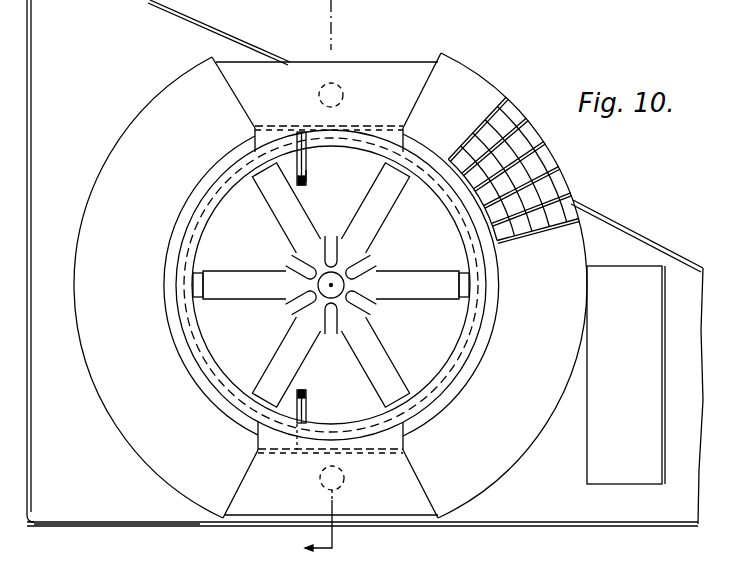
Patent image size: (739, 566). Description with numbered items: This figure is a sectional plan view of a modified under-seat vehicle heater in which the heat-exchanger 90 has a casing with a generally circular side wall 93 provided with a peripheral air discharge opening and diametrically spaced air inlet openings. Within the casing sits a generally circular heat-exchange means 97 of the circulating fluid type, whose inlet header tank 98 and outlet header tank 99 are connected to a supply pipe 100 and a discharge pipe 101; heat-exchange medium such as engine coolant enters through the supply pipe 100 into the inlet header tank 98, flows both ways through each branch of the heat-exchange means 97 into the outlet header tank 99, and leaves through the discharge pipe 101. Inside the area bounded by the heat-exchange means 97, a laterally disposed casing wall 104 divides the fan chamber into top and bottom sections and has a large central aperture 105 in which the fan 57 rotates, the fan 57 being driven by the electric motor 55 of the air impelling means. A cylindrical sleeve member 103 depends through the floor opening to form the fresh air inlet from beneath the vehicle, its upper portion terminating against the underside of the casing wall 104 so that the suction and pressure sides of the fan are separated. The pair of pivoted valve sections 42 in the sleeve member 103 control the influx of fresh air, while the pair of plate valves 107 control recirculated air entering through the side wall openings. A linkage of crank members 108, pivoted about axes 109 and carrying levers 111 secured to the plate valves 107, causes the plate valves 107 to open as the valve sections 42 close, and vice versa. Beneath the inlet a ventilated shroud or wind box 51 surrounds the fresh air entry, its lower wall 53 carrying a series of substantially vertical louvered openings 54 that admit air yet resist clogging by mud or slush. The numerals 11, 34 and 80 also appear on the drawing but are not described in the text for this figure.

The assembly 11 is at (303, 525).
The valve sections 42 is at (196, 277).
The shroud or wind box 51 is at (33, 466).
The lower wall 53 is at (126, 500).
The louvered openings 54 is at (661, 424).
The electric motor 55 is at (330, 328).
The fan 57 is at (380, 350).
The heat-exchanger 90 is at (478, 74).
The circular side wall 93 is at (93, 386).
The heat-exchange means 97 is at (542, 150).
The inlet header tank 98 is at (398, 509).
The outlet header tank 99 is at (372, 62).
The supply pipe 100 is at (345, 478).
The discharge pipe 101 is at (343, 93).
The sleeve member 103 is at (470, 330).
The casing wall 104 is at (191, 314).
The central aperture 105 is at (197, 222).
The plate valves 107 is at (283, 125).
The crank members 108 is at (305, 186).
The axes 109 is at (308, 176).
The levers 111 is at (306, 160).
The part 34 is at (374, 564).
The part 80 is at (447, 564).